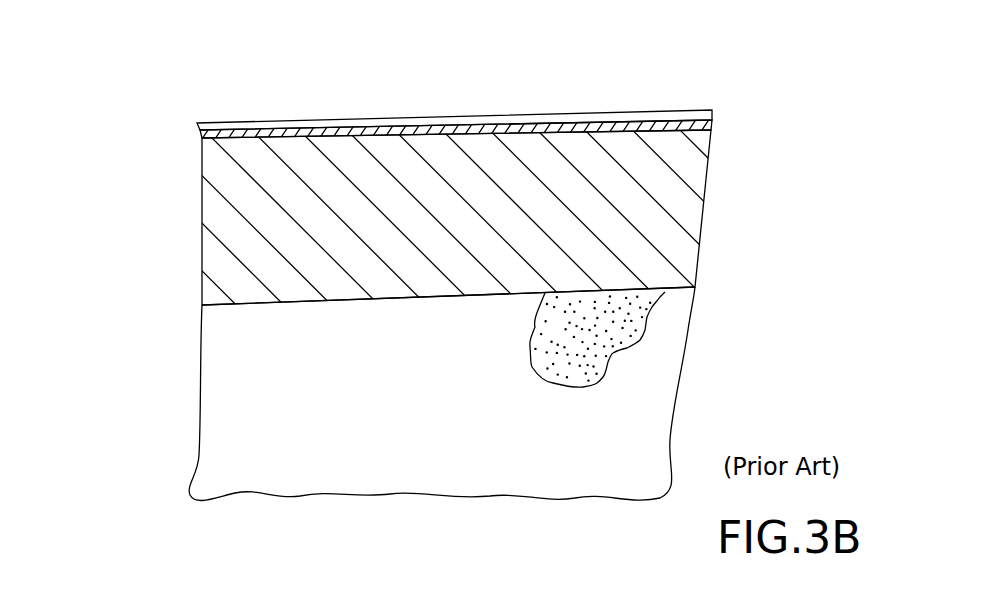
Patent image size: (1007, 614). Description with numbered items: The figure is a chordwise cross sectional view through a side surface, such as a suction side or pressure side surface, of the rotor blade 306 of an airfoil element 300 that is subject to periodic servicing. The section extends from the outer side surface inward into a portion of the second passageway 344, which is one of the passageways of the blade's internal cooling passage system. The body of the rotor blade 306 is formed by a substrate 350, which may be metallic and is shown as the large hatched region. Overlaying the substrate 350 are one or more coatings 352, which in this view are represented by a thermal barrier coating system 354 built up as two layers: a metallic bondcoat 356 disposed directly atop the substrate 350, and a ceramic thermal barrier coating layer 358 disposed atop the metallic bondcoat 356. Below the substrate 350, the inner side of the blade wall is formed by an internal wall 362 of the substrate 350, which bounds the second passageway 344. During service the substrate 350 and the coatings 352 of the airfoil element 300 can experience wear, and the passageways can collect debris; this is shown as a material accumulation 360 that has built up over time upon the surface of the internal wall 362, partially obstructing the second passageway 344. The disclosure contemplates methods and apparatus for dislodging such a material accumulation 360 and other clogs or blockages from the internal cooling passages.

The airfoil element 300 is at (124, 58).
The rotor blade 306 is at (135, 254).
The second passageway 344 is at (660, 386).
The substrate 350 is at (655, 212).
The coatings 352 is at (639, 94).
The thermal barrier coating system 354 is at (724, 103).
The metallic bondcoat 356 is at (200, 133).
The ceramic thermal barrier coating layer 358 is at (211, 124).
The material accumulation 360 is at (640, 320).
The internal wall 362 is at (297, 303).